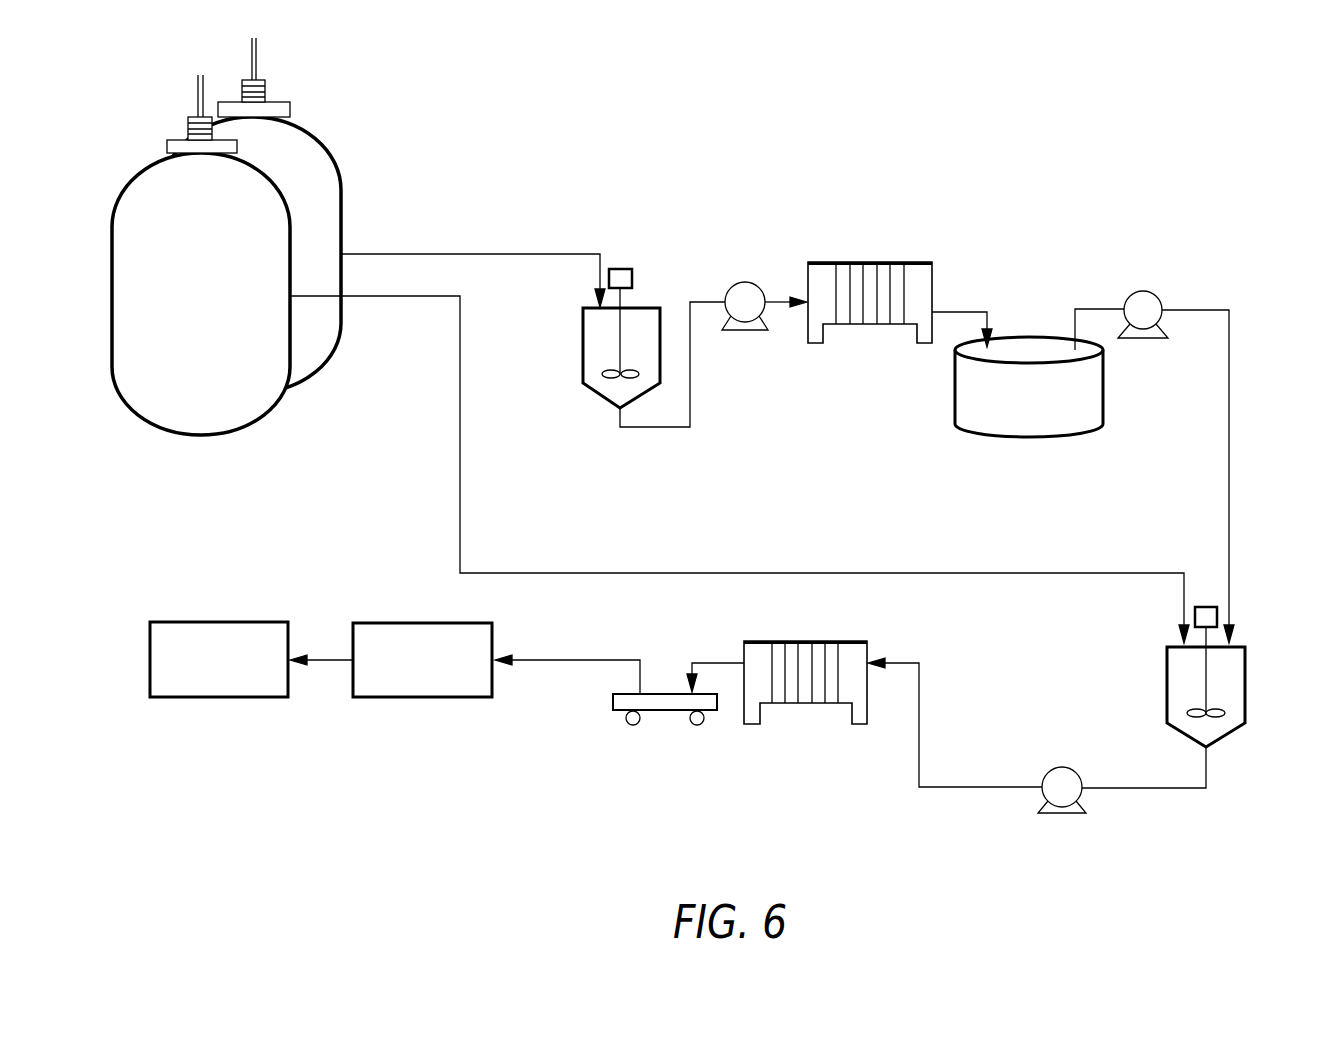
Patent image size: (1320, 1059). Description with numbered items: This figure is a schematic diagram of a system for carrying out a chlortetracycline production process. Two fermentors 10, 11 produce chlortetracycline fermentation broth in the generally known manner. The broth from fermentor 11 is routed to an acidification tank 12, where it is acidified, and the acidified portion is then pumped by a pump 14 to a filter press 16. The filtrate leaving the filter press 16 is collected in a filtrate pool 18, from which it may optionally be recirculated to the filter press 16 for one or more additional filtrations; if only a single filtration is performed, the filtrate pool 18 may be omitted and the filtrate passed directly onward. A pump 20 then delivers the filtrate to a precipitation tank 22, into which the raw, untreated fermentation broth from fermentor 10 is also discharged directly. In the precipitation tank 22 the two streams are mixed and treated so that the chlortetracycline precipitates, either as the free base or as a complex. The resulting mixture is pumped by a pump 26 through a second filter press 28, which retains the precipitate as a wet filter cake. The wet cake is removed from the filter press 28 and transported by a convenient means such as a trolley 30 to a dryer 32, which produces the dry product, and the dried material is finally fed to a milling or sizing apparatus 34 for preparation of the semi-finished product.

The fermentor 10 is at (275, 190).
The fermentor 11 is at (338, 172).
The acidification tank 12 is at (645, 302).
The pump 14 is at (757, 282).
The filter press 16 is at (932, 283).
The filtrate pool 18 is at (955, 377).
The pump 20 is at (1150, 290).
The precipitation tank 22 is at (1247, 677).
The pump 26 is at (1057, 766).
The filter press 28 is at (833, 705).
The trolley 30 is at (610, 702).
The dryer 32 is at (387, 698).
The milling or sizing apparatus 34 is at (185, 698).